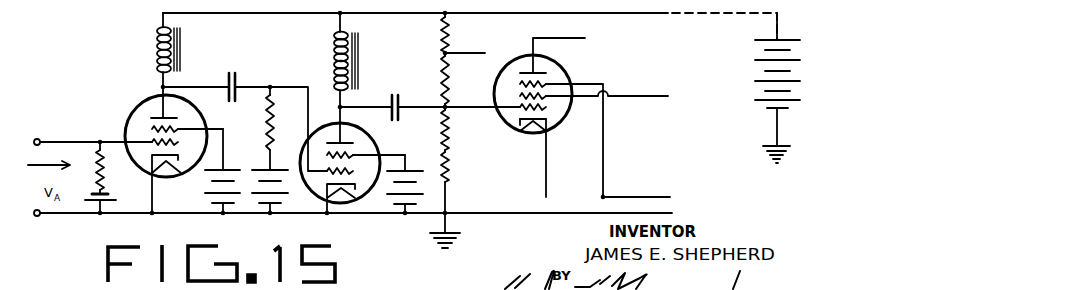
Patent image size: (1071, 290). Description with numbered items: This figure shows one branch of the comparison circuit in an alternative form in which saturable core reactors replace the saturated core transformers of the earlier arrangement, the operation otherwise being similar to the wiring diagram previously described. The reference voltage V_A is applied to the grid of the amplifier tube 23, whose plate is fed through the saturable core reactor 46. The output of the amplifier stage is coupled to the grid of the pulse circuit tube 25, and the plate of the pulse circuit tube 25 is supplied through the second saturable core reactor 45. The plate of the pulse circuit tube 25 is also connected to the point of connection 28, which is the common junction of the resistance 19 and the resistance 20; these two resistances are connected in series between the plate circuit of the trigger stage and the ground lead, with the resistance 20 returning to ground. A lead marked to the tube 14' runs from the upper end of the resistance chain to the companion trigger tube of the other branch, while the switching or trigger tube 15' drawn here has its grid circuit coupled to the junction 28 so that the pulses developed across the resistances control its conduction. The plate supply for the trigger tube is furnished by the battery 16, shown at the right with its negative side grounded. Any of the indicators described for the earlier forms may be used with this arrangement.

The saturable core reactor 46 is at (181, 50).
The amplifier tube 23 is at (126, 99).
The saturable core reactor 45 is at (359, 61).
The pulse circuit tube 25 is at (372, 132).
The switching or trigger tube 14' is at (470, 33).
The resistance 19 is at (450, 89).
The point of connection 28 is at (449, 113).
The resistance 20 is at (450, 170).
The switching or trigger tube 15' is at (548, 93).
The battery 16 is at (755, 70).